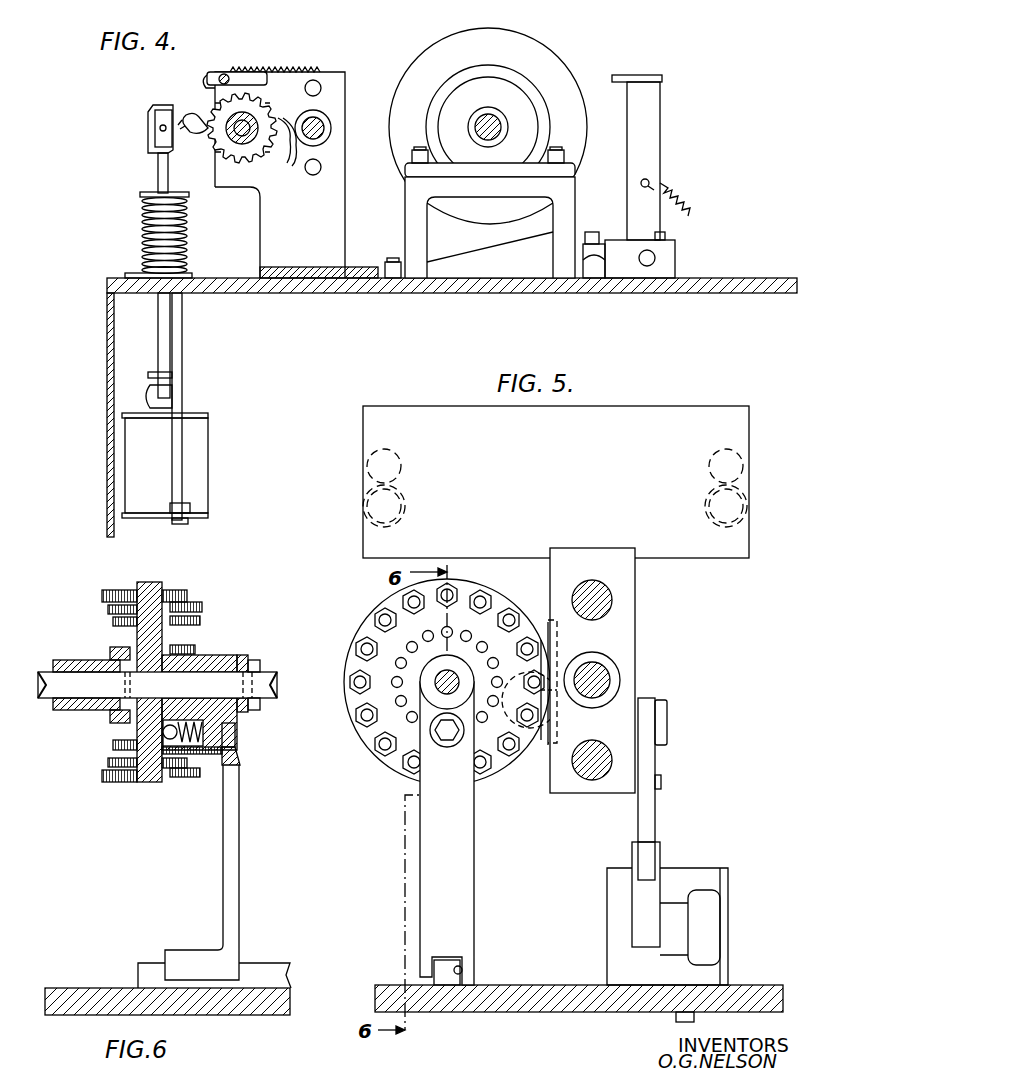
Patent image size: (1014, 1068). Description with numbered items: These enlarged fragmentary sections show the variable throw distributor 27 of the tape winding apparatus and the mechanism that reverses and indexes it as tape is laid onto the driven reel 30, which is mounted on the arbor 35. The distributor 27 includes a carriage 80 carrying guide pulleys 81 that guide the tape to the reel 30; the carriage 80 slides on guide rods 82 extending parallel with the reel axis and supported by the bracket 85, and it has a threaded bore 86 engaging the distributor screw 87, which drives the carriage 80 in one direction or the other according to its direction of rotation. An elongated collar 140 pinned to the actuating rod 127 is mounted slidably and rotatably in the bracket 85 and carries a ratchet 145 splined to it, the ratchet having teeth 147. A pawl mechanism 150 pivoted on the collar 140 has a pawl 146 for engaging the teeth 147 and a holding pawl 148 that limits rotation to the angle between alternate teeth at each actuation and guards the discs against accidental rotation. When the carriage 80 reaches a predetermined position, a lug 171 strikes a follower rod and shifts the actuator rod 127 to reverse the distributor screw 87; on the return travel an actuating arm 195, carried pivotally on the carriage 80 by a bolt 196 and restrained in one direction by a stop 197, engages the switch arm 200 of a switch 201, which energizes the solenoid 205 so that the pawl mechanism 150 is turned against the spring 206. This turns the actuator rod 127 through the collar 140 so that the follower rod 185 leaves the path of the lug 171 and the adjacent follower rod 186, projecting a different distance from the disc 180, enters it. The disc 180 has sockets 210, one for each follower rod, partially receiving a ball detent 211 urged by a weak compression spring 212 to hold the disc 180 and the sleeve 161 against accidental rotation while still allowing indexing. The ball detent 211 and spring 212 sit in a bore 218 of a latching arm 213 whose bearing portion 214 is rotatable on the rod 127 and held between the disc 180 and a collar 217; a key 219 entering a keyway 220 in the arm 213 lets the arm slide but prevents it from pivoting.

In FIG. 4, the variable throw distributor 27 is at (298, 56).
In FIG. 5, the variable throw distributor 27 is at (662, 620).
In FIG. 6, the variable throw distributor 27 is at (215, 602).
In FIG. 4, the driven reel 30 is at (548, 74).
In FIG. 4, the arbor 35 is at (478, 126).
In FIG. 5, the carriage 80 is at (680, 415).
In FIG. 5, the guide pulleys 81 is at (752, 512).
In FIG. 5, the guide rods 82 is at (592, 795).
In FIG. 4, the bracket 85 is at (335, 204).
In FIG. 5, the threaded bore 86 is at (610, 676).
In FIG. 5, the distributor screw 87 is at (600, 690).
In FIG. 4, the actuating rod 127 is at (240, 135).
In FIG. 5, the actuating rod 127 is at (440, 690).
In FIG. 6, the actuating rod 127 is at (268, 670).
In FIG. 4, the elongated collar 140 is at (253, 140).
In FIG. 4, the ratchet 145 is at (222, 118).
In FIG. 4, the pawl 146 is at (185, 150).
In FIG. 4, the ratchet teeth 147 is at (284, 162).
In FIG. 4, the holding pawl 148 is at (218, 78).
In FIG. 4, the pawl mechanism 150 is at (148, 124).
In FIG. 6, the sleeve 161 is at (70, 668).
In FIG. 5, the lug 171 is at (530, 724).
In FIG. 5, the disc 180 is at (393, 765).
In FIG. 6, the disc 180 is at (152, 565).
In FIG. 5, the follower rod 185 is at (545, 648).
In FIG. 5, the follower rod 186 is at (545, 700).
In FIG. 5, the actuating arm 195 is at (647, 825).
In FIG. 5, the bolt 196 is at (663, 740).
In FIG. 5, the stop 197 is at (660, 785).
In FIG. 5, the switch arm 200 is at (648, 862).
In FIG. 5, the switch 201 is at (712, 922).
In FIG. 4, the solenoid 205 is at (200, 462).
In FIG. 4, the spring 206 is at (145, 238).
In FIG. 5, the sockets 210 is at (398, 660).
In FIG. 6, the sockets 210 is at (165, 732).
In FIG. 6, the ball detent 211 is at (166, 742).
In FIG. 6, the compression spring 212 is at (215, 752).
In FIG. 5, the latching arm 213 is at (462, 890).
In FIG. 6, the latching arm 213 is at (232, 882).
In FIG. 6, the bearing portion 214 is at (222, 655).
In FIG. 6, the collar 217 is at (242, 655).
In FIG. 6, the bore 218 is at (236, 735).
In FIG. 5, the key 219 is at (445, 960).
In FIG. 6, the key 219 is at (262, 970).
In FIG. 5, the keyway 220 is at (462, 969).